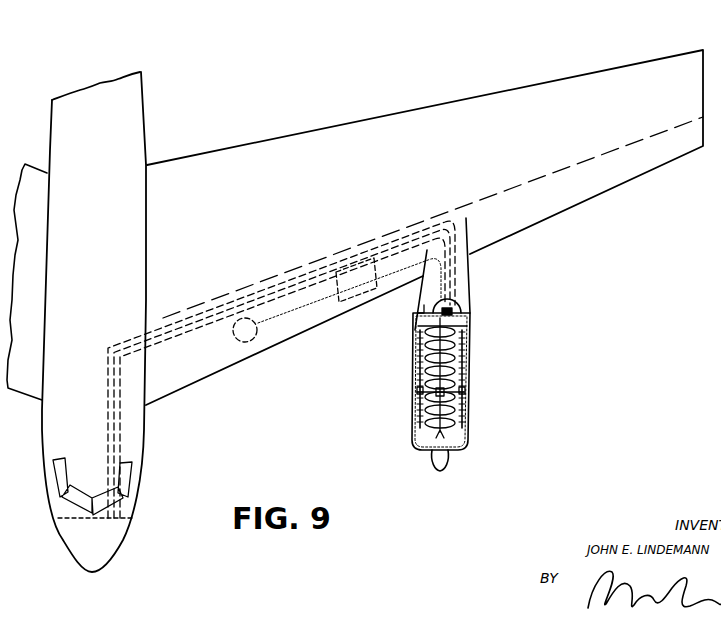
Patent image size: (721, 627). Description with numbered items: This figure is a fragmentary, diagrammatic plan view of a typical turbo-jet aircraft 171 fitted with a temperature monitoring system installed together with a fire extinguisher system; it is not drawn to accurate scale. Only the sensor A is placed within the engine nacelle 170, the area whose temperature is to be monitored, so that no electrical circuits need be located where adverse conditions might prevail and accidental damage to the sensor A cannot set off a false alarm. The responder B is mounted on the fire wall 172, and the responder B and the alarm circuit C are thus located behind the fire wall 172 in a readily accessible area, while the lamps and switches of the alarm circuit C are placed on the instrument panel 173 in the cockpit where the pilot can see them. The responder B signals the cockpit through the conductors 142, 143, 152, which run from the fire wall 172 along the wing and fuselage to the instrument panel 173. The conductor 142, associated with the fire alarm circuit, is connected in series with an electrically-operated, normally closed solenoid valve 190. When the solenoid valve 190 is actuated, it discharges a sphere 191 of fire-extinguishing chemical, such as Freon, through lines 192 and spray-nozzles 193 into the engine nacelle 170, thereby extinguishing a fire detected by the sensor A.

The conductor 142 is at (196, 322).
The conductor 143 is at (164, 339).
The conductor 152 is at (224, 300).
The engine nacelle 170 is at (472, 398).
The aircraft 171 is at (190, 387).
The fire wall 172 is at (467, 322).
The instrument panel 173 is at (132, 515).
The solenoid valve 190 is at (336, 300).
The sphere 191 is at (250, 343).
The lines 192 is at (418, 313).
The spray-nozzles 193 is at (471, 418).
The sensor A is at (436, 453).
The responder B is at (462, 312).
The alarm circuit C is at (373, 251).